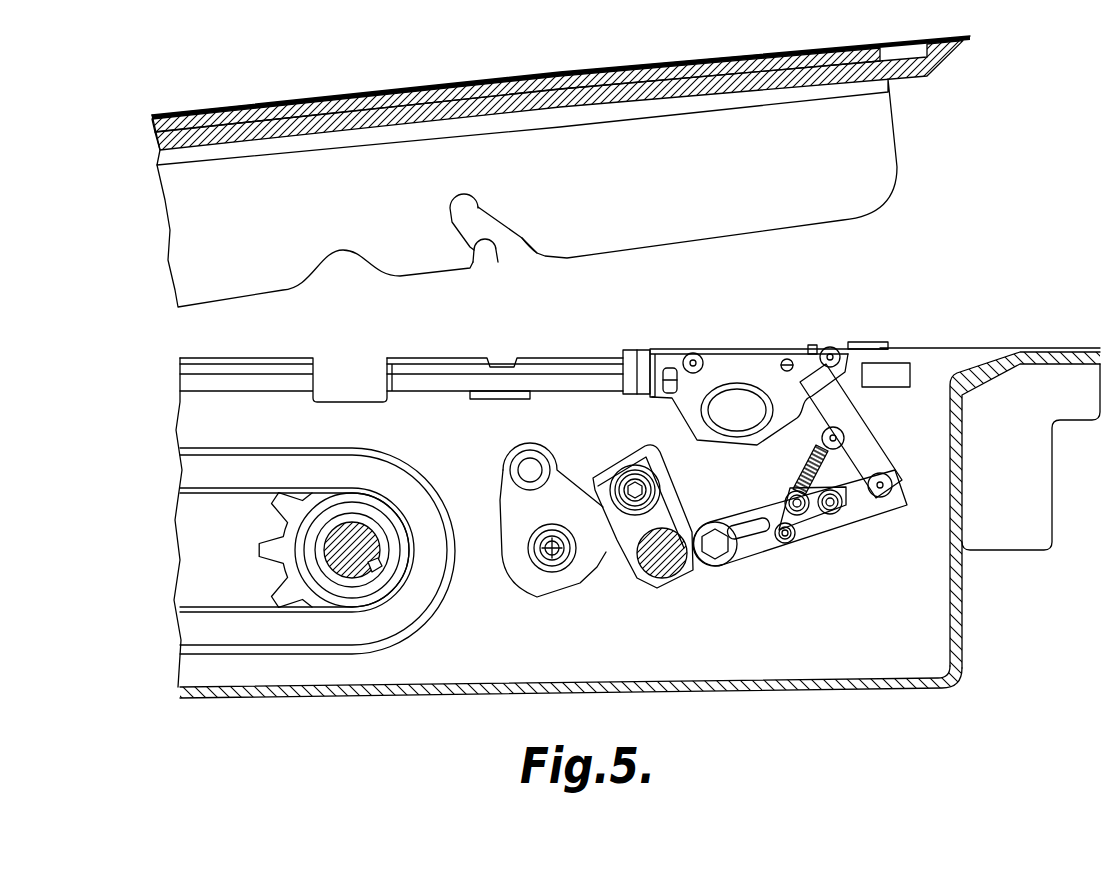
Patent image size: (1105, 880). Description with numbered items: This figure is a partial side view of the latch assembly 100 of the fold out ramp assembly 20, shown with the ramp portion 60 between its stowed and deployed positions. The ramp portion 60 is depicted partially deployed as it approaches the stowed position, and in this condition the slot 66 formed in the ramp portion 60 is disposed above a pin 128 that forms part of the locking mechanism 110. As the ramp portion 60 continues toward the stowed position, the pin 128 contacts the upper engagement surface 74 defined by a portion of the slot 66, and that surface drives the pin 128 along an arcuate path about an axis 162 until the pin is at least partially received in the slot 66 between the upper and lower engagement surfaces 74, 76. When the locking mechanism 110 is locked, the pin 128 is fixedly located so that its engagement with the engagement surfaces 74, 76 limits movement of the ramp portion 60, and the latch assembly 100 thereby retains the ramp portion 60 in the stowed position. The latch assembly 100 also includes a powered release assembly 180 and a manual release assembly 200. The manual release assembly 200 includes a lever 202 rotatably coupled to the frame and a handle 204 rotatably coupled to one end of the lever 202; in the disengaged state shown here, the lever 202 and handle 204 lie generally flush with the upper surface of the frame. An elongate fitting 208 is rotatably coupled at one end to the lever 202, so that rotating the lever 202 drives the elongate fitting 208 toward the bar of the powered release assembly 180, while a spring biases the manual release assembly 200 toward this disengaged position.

The fold out ramp assembly 20 is at (995, 716).
The ramp portion 60 is at (561, 172).
The slot 66 is at (446, 198).
The upper engagement surface 74 is at (520, 243).
The lower engagement surface 76 is at (497, 252).
The latch assembly 100 is at (744, 663).
The locking mechanism 110 is at (556, 612).
The pin 128 is at (541, 449).
The axis 162 is at (549, 553).
The powered release assembly 180 is at (640, 597).
The manual release assembly 200 is at (844, 550).
The lever 202 is at (797, 448).
The handle 204 is at (662, 397).
The elongate fitting 208 is at (886, 520).